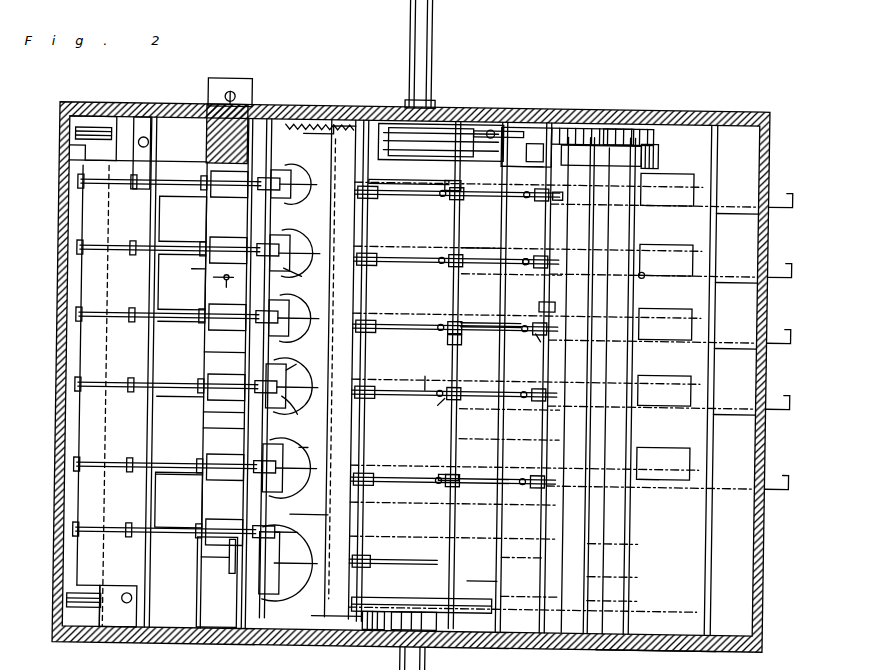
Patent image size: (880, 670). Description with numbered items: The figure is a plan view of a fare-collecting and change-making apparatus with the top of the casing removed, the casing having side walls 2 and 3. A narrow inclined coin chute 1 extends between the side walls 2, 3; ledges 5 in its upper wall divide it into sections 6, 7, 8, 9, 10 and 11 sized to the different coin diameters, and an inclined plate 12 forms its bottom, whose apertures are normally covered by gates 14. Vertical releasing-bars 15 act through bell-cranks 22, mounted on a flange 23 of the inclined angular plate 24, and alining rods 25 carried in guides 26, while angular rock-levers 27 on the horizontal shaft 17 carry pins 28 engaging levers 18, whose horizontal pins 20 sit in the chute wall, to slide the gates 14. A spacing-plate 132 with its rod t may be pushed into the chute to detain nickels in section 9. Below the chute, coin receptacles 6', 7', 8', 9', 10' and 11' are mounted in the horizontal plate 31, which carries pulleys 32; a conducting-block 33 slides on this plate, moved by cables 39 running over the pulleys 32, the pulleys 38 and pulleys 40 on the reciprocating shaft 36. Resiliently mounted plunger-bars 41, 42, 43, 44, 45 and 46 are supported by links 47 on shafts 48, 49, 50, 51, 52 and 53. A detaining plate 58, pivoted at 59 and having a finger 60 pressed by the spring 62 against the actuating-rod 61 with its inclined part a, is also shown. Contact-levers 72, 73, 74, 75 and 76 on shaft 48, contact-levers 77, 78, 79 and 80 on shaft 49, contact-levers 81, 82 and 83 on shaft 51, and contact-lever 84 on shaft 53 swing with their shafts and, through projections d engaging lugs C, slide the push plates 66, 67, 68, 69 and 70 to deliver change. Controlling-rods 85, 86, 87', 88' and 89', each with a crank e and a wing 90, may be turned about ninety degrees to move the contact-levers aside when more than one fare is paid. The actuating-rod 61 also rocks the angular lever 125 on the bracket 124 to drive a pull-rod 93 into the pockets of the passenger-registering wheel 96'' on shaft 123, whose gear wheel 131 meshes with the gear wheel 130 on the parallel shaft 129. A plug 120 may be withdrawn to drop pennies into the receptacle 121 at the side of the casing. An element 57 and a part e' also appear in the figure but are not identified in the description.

The coin chute 1 is at (204, 353).
The side wall of casing 2 is at (672, 647).
The side wall of casing 3 is at (120, 107).
The ledge 5 is at (224, 430).
The chute section 6 is at (209, 582).
The chute section 7 is at (178, 483).
The chute section 8 is at (179, 404).
The chute section 9 is at (181, 328).
The chute section 10 is at (199, 265).
The chute section 11 is at (90, 371).
The inclined plate 12 is at (152, 428).
The detaining plate or gate 14 is at (290, 370).
The releasing-bar 15 is at (80, 248).
The horizontal shaft 17 is at (272, 217).
The lever 18 is at (297, 413).
The horizontal pin 20 is at (245, 490).
The bell-crank 22 is at (128, 264).
The flange 23 is at (135, 330).
The inclined angular plate 24 is at (153, 445).
The alining rod 25 is at (180, 391).
The post or guide 26 is at (158, 542).
The rock-lever 27 is at (180, 250).
The transverse pin 28 is at (300, 270).
The horizontal partition or plate 31 is at (304, 631).
The pulley 32 is at (80, 130).
The conducting-block 33 is at (78, 438).
The shaft 36 is at (405, 98).
The pulley 38 is at (398, 632).
The cable 39 is at (300, 121).
The pulley 40 is at (462, 125).
The plunger-bar 41 is at (393, 553).
The plunger-bar 42 is at (460, 466).
The plunger-bar 43 is at (510, 391).
The plunger-bar 44 is at (491, 316).
The plunger-bar 45 is at (482, 237).
The plunger-bar 46 is at (414, 198).
The link 47 is at (492, 330).
The shaft 48 is at (368, 534).
The shaft 49 is at (499, 546).
The shaft 50 is at (482, 575).
The shaft 51 is at (521, 552).
The shaft 52 is at (640, 574).
The shaft 53 is at (640, 598).
The arm 57 is at (311, 446).
The detaining plate 58 is at (309, 506).
The pivot 59 is at (370, 632).
The finger 60 is at (319, 125).
The actuating-rod 61 is at (430, 124).
The spring 62 is at (314, 125).
The push plate 66 is at (690, 472).
The push plate 67 is at (690, 388).
The push plate 68 is at (690, 322).
The push plate 69 is at (690, 258).
The push plate 70 is at (690, 186).
The contact-lever 72 is at (388, 496).
The contact-lever 73 is at (388, 410).
The contact-lever 74 is at (384, 332).
The contact-lever 75 is at (390, 268).
The contact-lever 76 is at (382, 202).
The contact-lever 77 is at (509, 433).
The contact-lever 78 is at (461, 347).
The contact-lever 79 is at (511, 286).
The contact-lever 80 is at (458, 194).
The contact-lever 81 is at (552, 378).
The contact-lever 82 is at (529, 250).
The contact-lever 83 is at (554, 212).
The contact-lever 84 is at (654, 272).
The controlling-rod 85 is at (733, 492).
The controlling-rod 86 is at (734, 426).
The controlling-rod 87' is at (735, 357).
The controlling-rod 88' is at (736, 292).
The controlling-rod 89' is at (737, 224).
The wing 90 is at (662, 488).
The pull-rod 93 is at (620, 200).
The wheel 96'' is at (632, 156).
The plug 120 is at (206, 109).
The elongated receptacle 121 is at (246, 85).
The shaft 123 is at (640, 541).
The bracket 124 is at (513, 147).
The angular rock lever 125 is at (516, 126).
The shaft 129 is at (529, 590).
The gear wheel 130 is at (558, 126).
The gear wheel 131 is at (622, 126).
The spacing-plate 132 is at (226, 294).
The coin receptacle 6' is at (288, 563).
The coin receptacle 7' is at (289, 468).
The coin receptacle 8' is at (291, 386).
The coin receptacle 9' is at (294, 318).
The coin receptacle 10' is at (298, 251).
The coin receptacle 11' is at (297, 177).
The crank e is at (785, 341).
The lever e' is at (200, 576).
The rod t is at (223, 267).
The inclined part a is at (438, 411).
The lug C is at (425, 376).
The projection d is at (535, 340).